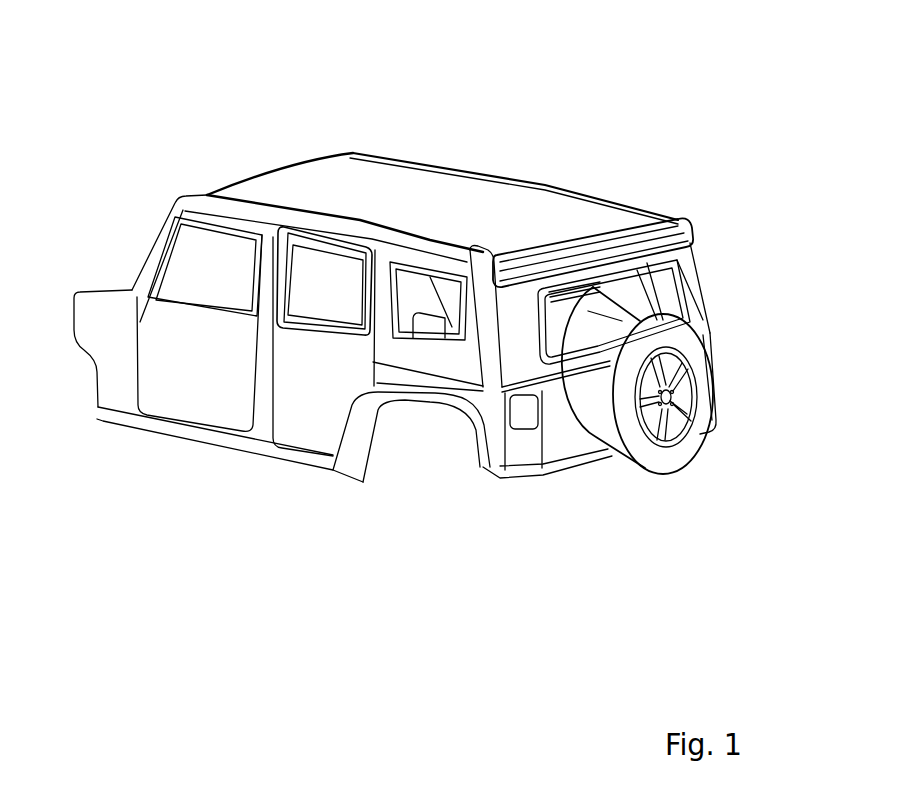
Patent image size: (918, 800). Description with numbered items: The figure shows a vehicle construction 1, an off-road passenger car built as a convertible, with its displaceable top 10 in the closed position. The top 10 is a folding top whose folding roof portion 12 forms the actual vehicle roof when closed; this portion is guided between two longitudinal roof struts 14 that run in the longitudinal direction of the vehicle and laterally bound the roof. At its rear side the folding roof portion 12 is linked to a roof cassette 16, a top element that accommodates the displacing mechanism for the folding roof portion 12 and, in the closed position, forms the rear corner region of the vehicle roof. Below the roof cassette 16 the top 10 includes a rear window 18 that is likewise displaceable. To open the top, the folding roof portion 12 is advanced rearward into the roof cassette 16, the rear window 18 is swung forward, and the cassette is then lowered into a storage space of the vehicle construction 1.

The vehicle construction 1 is at (638, 125).
The top 10 is at (336, 174).
The folding roof portion 12 is at (433, 188).
The longitudinal roof struts 14 is at (228, 212).
The roof cassette 16 is at (670, 240).
The rear window 18 is at (592, 330).